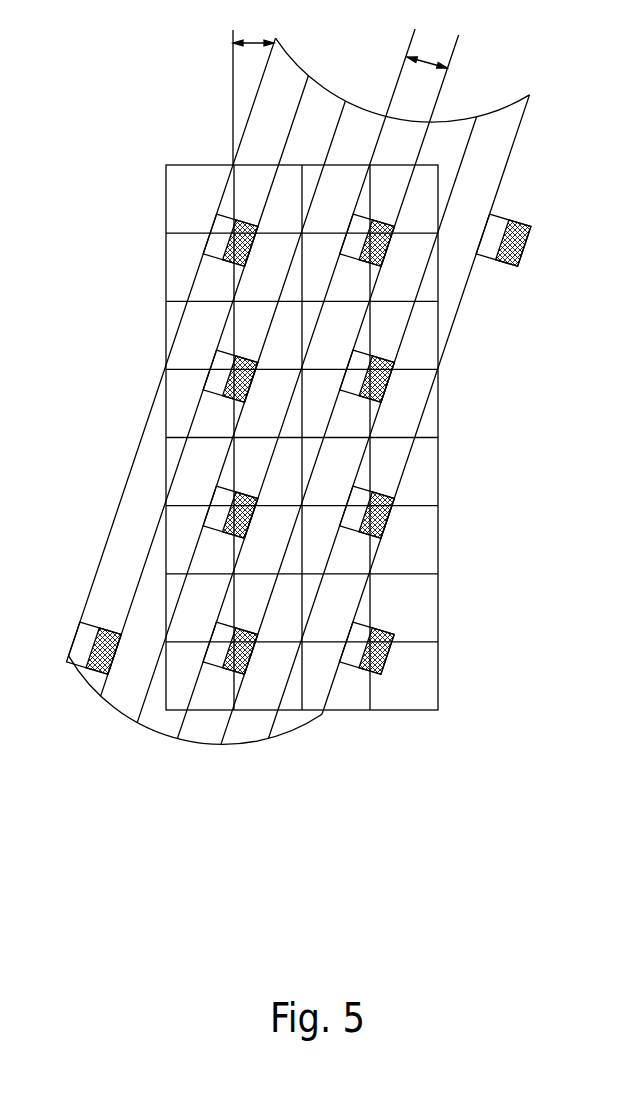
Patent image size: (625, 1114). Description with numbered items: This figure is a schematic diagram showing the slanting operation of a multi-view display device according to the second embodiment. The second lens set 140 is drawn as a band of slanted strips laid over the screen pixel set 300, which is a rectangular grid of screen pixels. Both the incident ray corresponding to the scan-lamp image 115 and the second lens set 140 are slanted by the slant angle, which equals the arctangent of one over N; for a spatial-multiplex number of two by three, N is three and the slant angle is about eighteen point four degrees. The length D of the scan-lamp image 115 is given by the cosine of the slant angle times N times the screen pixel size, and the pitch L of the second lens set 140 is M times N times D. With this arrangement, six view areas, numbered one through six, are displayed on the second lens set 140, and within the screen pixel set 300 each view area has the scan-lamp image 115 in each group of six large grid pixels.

The second lens set 140 is at (267, 107).
The screen pixel set 300 is at (180, 258).
The scan-lamp image 115 is at (395, 628).